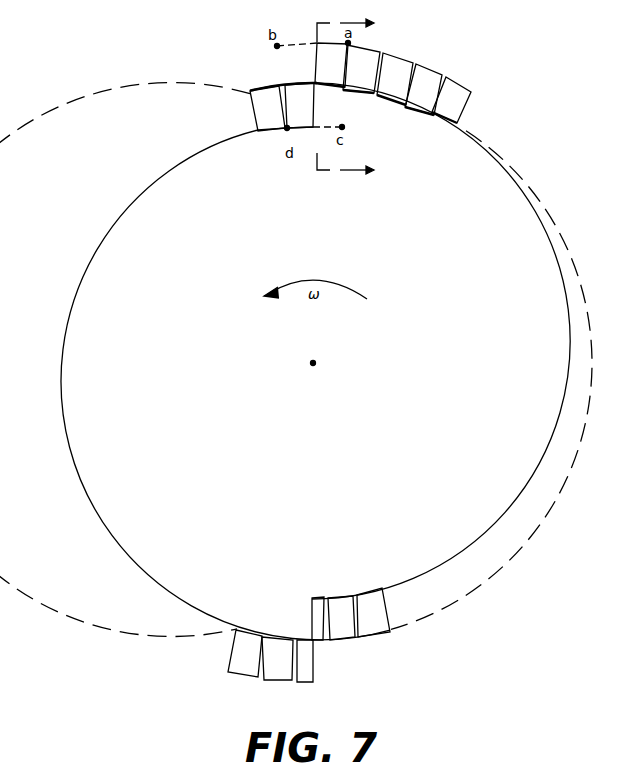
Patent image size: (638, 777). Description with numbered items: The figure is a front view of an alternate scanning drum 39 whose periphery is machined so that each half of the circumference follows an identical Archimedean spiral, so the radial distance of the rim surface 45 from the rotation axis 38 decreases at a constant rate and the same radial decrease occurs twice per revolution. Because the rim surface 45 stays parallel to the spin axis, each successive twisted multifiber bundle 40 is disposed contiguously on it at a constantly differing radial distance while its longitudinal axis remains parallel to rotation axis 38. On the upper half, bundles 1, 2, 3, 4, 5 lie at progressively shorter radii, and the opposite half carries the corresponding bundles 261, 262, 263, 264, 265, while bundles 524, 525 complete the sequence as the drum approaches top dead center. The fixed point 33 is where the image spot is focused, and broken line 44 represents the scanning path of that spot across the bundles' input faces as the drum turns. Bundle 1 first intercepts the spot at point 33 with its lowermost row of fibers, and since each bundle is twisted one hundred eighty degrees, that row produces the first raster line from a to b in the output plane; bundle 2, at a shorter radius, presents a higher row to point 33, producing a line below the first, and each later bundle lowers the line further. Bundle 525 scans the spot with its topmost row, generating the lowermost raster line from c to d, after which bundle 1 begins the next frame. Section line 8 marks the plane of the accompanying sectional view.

The fiber bundle 1 is at (331, 74).
The bundle 2 is at (361, 77).
The pole piece 3 is at (395, 84).
The pole piece 4 is at (423, 94).
The pole piece 5 is at (451, 106).
The section line 8- 8 is at (351, 98).
The point 33 is at (315, 82).
The rotation axis 38 is at (316, 368).
The rotor disk 39 is at (190, 392).
The multifiber bundle 40 is at (466, 86).
The broken line 44 is at (536, 197).
The rim surface 45 is at (496, 525).
The pole piece 261 is at (373, 605).
The pole piece 262 is at (340, 609).
The pole piece 263 is at (308, 611).
The pole piece 264 is at (287, 649).
The pole piece 265 is at (246, 645).
The pole piece 524 is at (267, 116).
The bundle 525 is at (300, 115).